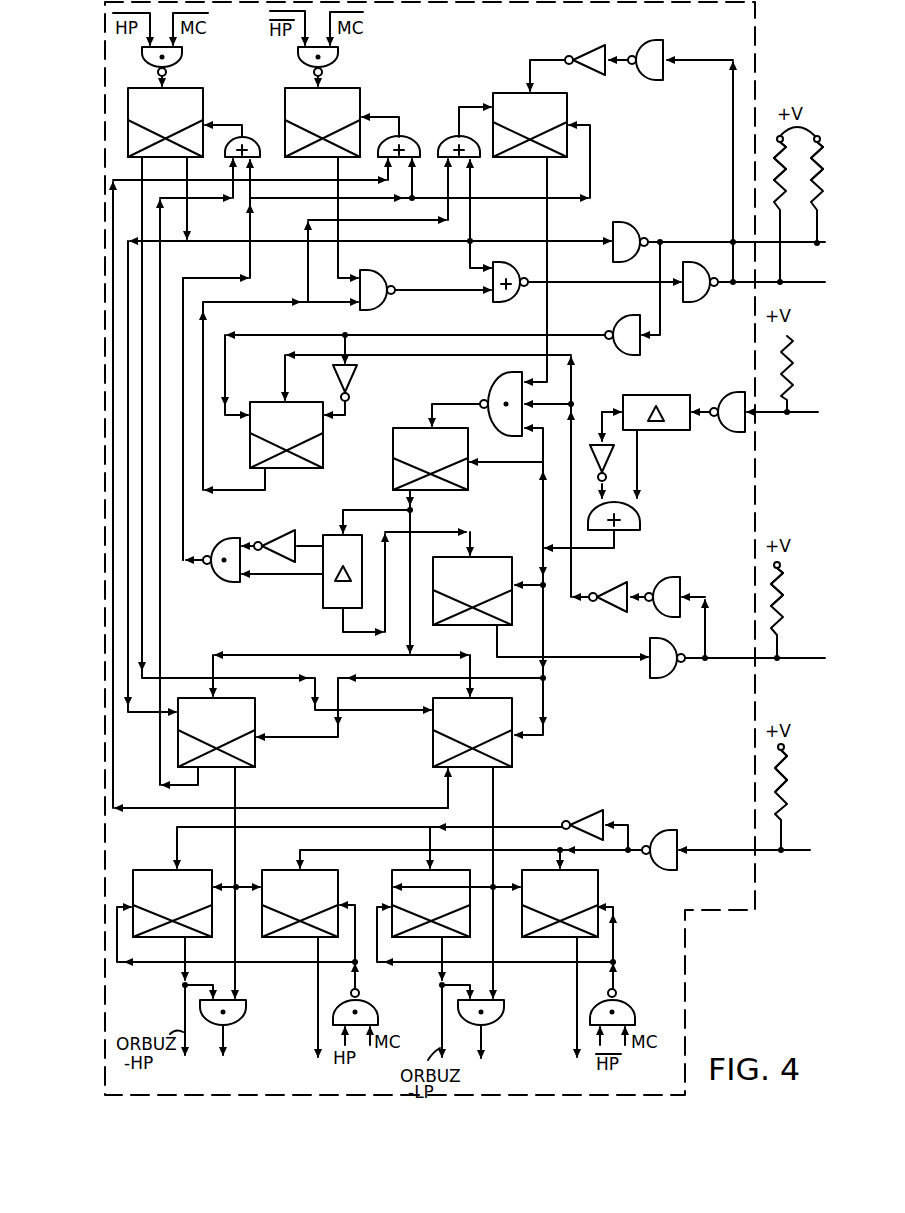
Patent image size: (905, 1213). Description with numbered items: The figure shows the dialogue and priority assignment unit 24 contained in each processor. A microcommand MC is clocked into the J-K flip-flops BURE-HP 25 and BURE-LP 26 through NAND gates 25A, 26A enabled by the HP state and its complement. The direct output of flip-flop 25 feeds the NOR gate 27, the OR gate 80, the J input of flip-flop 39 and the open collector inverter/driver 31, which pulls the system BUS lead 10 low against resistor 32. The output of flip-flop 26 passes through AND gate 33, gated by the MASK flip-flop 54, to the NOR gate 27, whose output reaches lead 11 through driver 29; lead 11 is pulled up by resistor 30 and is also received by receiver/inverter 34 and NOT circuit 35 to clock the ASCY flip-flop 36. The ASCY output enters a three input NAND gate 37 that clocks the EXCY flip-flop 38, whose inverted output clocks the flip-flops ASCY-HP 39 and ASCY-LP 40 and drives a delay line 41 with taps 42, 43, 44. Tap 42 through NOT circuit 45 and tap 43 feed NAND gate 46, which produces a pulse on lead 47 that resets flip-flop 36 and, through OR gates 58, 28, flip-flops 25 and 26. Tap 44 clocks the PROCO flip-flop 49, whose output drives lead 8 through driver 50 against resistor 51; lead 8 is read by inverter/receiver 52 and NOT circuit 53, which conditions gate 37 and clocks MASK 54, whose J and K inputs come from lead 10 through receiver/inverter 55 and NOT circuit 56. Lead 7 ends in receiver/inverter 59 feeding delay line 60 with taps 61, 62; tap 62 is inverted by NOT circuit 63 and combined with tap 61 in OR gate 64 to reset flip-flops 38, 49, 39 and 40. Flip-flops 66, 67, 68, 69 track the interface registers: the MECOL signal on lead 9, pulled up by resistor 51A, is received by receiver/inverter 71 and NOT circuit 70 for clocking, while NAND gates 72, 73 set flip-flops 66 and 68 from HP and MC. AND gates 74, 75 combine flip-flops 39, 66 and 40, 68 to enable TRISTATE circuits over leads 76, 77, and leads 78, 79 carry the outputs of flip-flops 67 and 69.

The lead 7 is at (777, 413).
The system BUS lead 8 is at (722, 657).
The lead 9 is at (729, 850).
The system BUS lead 10 is at (706, 241).
The system BUS lead 11 is at (812, 286).
The dialogue and priority assignment unit 24 is at (686, 942).
The J-K flip-flop BURE-HP 25 is at (203, 91).
The NAND gate 25A is at (182, 56).
The J-K flip-flop BURE-LP 26 is at (296, 91).
The NAND gate 26A is at (338, 56).
The NOR gate 27 is at (500, 302).
The OR gate 28 is at (408, 135).
The open collector inverter/driver 29 is at (693, 303).
The resistor 30 is at (781, 156).
The open collector inverter/driver 31 is at (645, 220).
The resistor 32 is at (817, 210).
The AND gate 33 is at (378, 272).
The receiver/inverter 34 is at (661, 43).
The NOT circuit 35 is at (614, 38).
The J-K flip-flop ASCY 36 is at (508, 92).
The three input NAND gate 37 is at (499, 375).
The J-K flip-flop EXCY 38 is at (392, 460).
The J-K flip-flop ASCY-HP 39 is at (255, 705).
The J-K flip-flop ASCY-LP 40 is at (433, 741).
The delay line 41 is at (323, 600).
The output tap 42 is at (323, 533).
The output tap 43 is at (323, 577).
The output tap 44 is at (341, 612).
The NOT circuit 45 is at (283, 540).
The NAND gate 46 is at (224, 584).
The lead 47 is at (183, 514).
The flip-flop PROCO 49 is at (497, 556).
The open collector inverter/driver 50 is at (660, 683).
The resistor 51 is at (781, 623).
The pull up resistor 51A is at (784, 773).
The inverter/receiver 52 is at (678, 580).
The NOT circuit 53 is at (601, 609).
The J-K flip-flop MASK 54 is at (265, 400).
The receiver/inverter 55 is at (622, 318).
The NOT circuit 56 is at (353, 380).
The OR gate 58 is at (248, 134).
The receiver/inverter 59 is at (735, 434).
The delay line 60 is at (684, 395).
The intermediate tap 61 is at (640, 436).
The output tap 62 is at (616, 408).
The NOT circuit 63 is at (612, 468).
The OR gate 64 is at (641, 510).
The flip-flop 66 is at (145, 869).
The flip-flop 67 is at (272, 869).
The flip-flop 68 is at (392, 876).
The flip-flop 69 is at (598, 873).
The NOT circuit 70 is at (602, 809).
The receiver/inverter 71 is at (673, 828).
The NAND gate 72 is at (376, 997).
The NAND gate 73 is at (626, 998).
The AND gate 74 is at (244, 1014).
The AND gate 75 is at (504, 1015).
The lead 76 is at (227, 1048).
The lead 77 is at (485, 1050).
The lead 78 is at (317, 988).
The lead 79 is at (577, 982).
The OR gate 80 is at (478, 152).